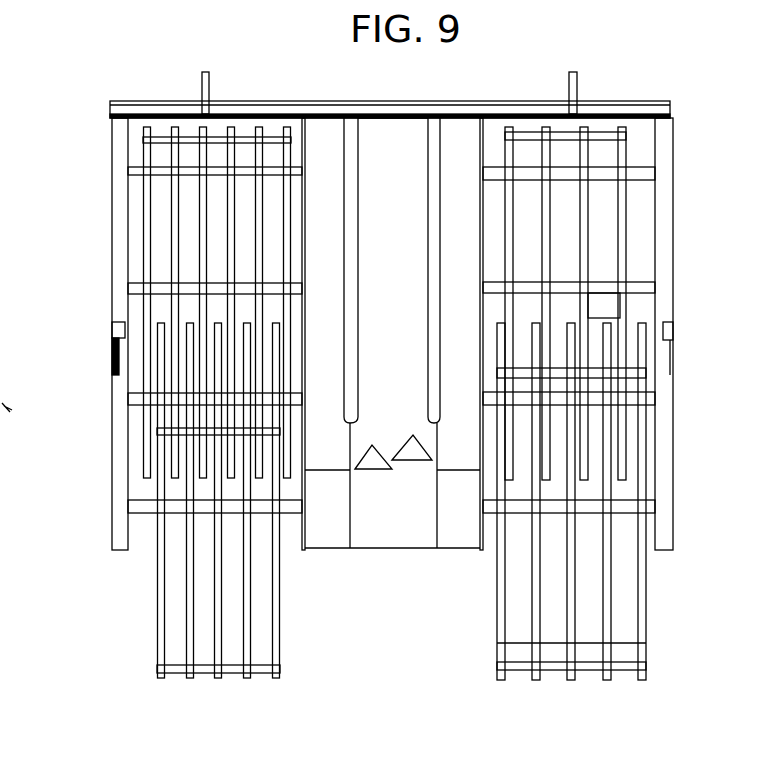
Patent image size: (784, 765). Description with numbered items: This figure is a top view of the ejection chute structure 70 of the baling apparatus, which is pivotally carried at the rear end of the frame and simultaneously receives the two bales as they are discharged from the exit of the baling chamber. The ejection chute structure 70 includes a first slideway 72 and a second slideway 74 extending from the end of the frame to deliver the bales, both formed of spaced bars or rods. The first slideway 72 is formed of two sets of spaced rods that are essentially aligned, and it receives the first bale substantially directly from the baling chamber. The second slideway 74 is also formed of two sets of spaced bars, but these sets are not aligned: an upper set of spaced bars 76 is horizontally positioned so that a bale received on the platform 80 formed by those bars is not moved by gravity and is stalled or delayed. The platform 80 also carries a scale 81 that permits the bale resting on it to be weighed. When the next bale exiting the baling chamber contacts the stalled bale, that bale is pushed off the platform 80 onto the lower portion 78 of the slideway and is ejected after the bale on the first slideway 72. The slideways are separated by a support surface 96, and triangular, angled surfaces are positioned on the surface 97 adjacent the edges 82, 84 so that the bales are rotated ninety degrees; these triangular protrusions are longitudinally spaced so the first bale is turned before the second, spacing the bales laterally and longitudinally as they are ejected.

The ejection chute structure 70 is at (104, 428).
The first slideway 72 is at (250, 131).
The second slideway 74 is at (637, 377).
The upper set of spaced bars 76 is at (230, 483).
The lower portion of the slideway 78 is at (583, 483).
The platform 80 is at (579, 210).
The scale 81 is at (602, 302).
The edge 82 is at (338, 396).
The edge 84 is at (471, 396).
The support surface 96 is at (394, 528).
The surface 97 is at (410, 174).